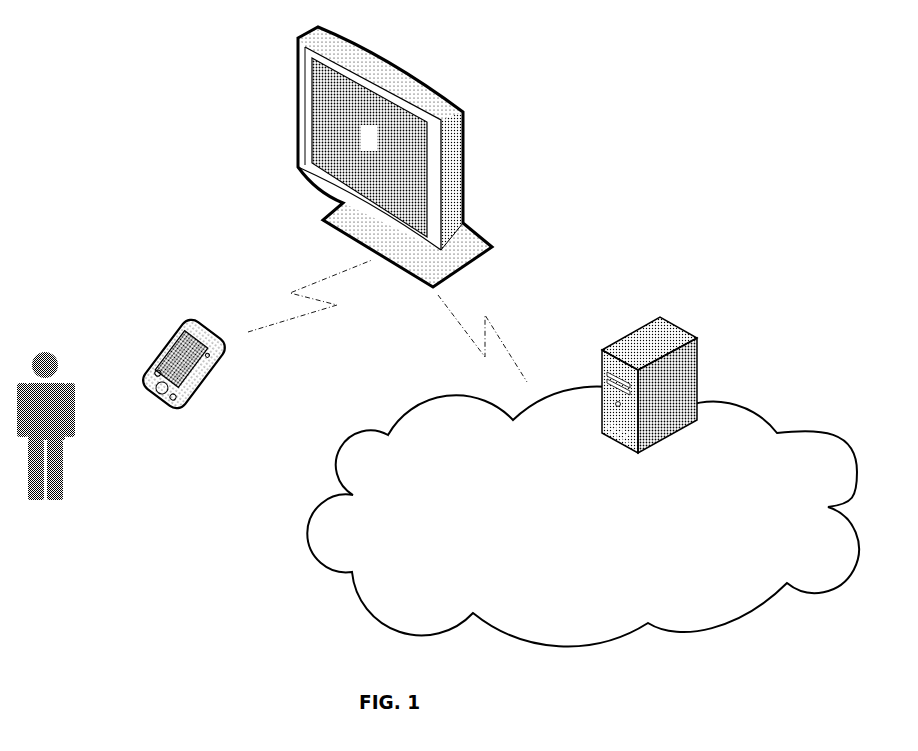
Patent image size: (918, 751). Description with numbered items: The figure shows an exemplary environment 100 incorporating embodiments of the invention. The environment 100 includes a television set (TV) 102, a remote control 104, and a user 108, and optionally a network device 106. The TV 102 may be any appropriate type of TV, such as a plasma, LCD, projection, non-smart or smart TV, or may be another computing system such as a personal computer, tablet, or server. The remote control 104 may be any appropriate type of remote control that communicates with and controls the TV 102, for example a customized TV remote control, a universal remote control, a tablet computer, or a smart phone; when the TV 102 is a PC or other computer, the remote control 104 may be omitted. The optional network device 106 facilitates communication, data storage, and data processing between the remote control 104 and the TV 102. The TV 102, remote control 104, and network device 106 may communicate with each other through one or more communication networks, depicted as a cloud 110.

The environment 100 is at (119, 32).
The television set 102 is at (465, 132).
The remote control 104 is at (205, 392).
The network device 106 is at (697, 385).
The user 108 is at (62, 487).
The network 110 is at (426, 495).